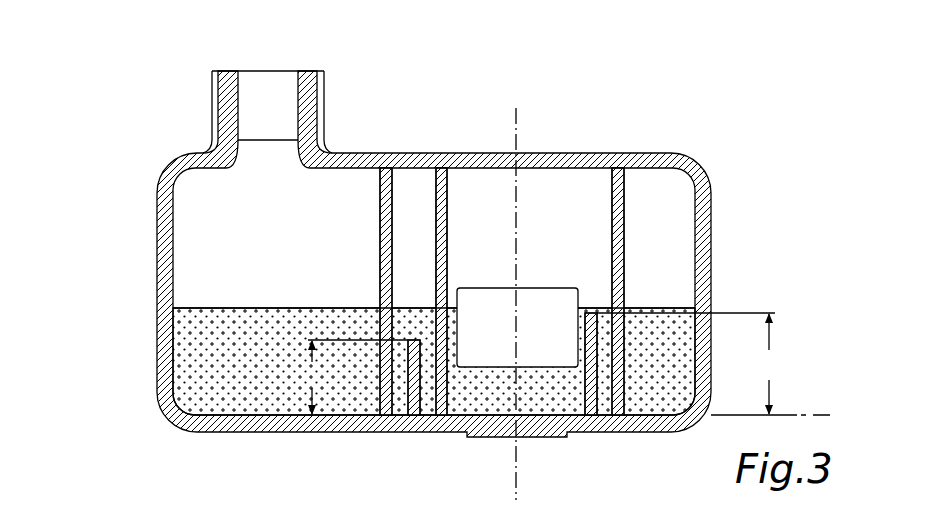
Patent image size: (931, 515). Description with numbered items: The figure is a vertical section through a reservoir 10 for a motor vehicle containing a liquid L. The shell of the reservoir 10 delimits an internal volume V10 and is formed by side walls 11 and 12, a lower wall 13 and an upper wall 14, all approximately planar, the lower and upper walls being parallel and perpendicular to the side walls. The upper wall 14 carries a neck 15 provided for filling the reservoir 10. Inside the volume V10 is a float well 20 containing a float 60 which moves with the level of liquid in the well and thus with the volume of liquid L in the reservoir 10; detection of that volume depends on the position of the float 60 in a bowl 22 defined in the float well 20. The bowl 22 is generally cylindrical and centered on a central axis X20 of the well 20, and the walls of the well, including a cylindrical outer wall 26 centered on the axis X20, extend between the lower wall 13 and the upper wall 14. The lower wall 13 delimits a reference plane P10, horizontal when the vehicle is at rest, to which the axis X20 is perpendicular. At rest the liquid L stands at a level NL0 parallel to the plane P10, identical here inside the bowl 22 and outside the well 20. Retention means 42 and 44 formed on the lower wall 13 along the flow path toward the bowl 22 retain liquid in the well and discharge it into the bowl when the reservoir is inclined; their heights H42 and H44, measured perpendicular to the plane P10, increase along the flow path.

The reservoir 10 is at (148, 100).
The side wall 11 is at (708, 240).
The side wall 12 is at (379, 6).
The lower wall 13 is at (232, 429).
The upper wall 14 is at (657, 153).
The neck 15 is at (317, 102).
The float well 20 is at (552, 188).
The bowl 22 is at (490, 400).
The cylindrical outer wall 26 is at (625, 262).
The retention means 42 is at (408, 378).
The retention means 44 is at (600, 362).
The float 60 is at (517, 327).
The liquid L is at (196, 354).
The level NL0 is at (220, 308).
The internal volume V10 is at (267, 222).
The central axis X20 is at (524, 291).
The reference plane P10 is at (790, 415).
The height H42 is at (352, 377).
The height H44 is at (692, 363).